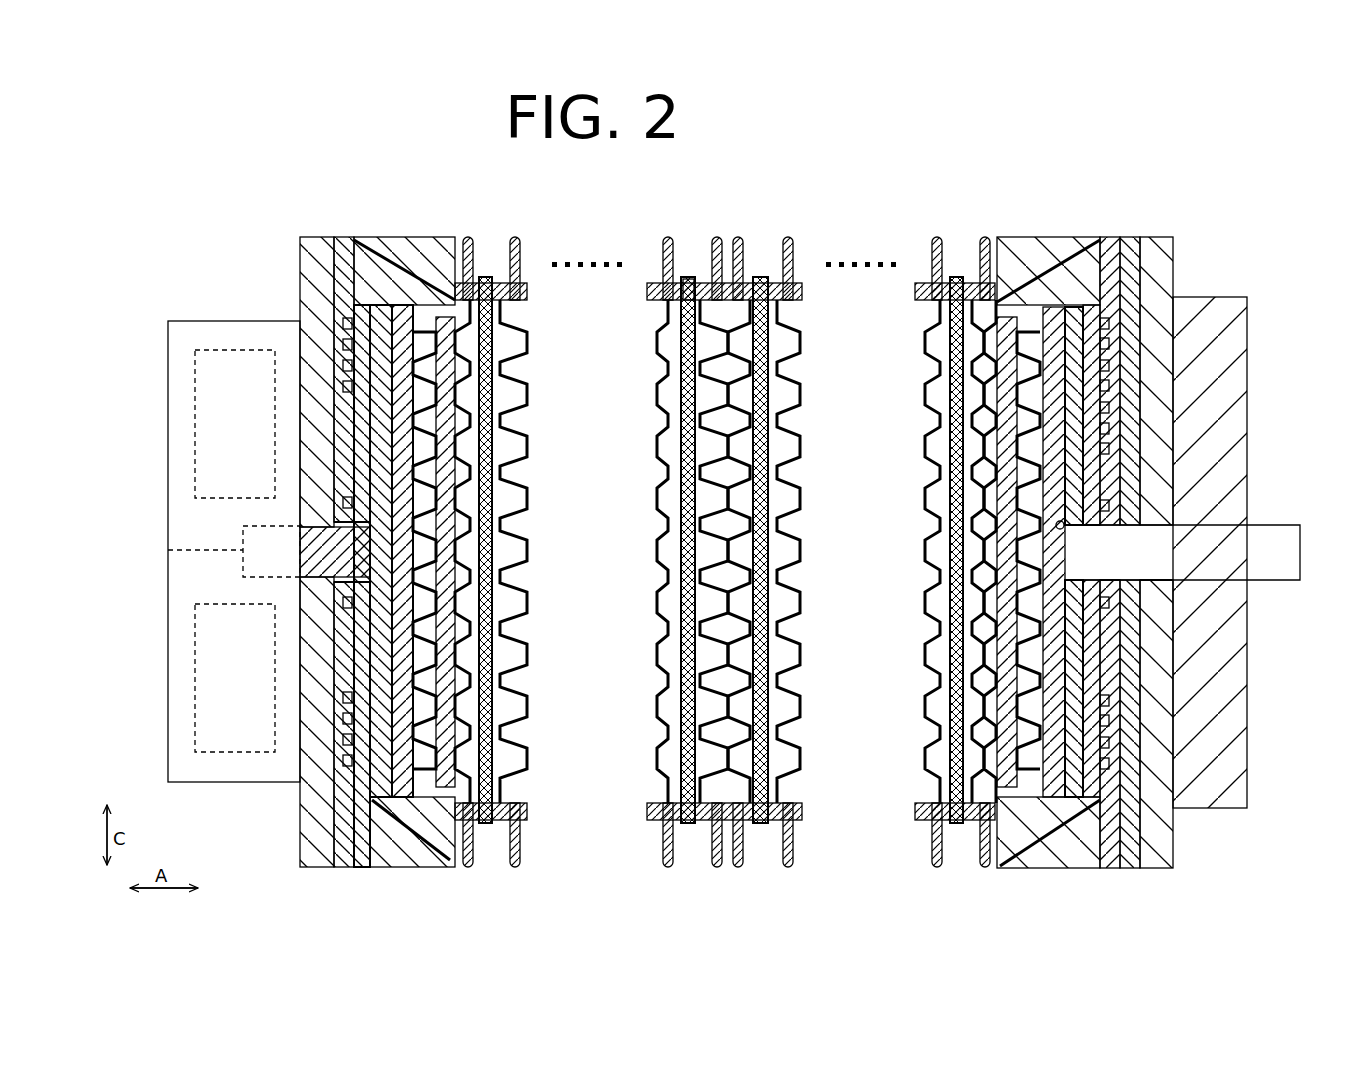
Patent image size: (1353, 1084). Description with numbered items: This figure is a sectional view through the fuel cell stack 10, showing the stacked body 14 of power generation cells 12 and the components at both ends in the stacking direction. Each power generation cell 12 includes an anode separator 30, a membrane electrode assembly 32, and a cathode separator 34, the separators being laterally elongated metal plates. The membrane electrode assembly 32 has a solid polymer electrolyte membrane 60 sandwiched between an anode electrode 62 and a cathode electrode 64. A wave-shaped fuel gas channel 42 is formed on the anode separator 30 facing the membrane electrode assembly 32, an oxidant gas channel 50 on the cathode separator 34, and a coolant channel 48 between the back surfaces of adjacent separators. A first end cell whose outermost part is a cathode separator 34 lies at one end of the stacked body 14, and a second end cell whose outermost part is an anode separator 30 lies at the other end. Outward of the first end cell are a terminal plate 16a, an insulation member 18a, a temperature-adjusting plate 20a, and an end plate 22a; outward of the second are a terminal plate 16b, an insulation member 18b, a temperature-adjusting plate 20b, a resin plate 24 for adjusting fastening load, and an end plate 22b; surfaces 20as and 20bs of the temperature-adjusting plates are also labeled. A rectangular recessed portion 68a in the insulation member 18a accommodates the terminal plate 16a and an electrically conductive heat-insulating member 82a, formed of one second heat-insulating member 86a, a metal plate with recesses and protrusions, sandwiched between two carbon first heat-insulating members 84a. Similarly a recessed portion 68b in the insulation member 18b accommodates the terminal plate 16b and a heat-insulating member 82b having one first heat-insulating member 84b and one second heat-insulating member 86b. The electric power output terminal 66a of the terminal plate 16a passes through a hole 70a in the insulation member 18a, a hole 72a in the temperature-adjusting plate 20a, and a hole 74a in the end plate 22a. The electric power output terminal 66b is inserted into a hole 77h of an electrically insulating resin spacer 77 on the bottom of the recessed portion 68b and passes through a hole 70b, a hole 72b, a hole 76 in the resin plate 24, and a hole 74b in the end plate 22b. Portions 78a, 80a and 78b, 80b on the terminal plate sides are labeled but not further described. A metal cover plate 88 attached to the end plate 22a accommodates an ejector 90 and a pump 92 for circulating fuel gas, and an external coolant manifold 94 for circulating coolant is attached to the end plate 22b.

The fuel cell stack 10 is at (196, 220).
The power generation cell 12 is at (725, 487).
The stacked body 14 is at (792, 201).
The terminal plate 16a is at (372, 303).
The terminal plate 16b is at (1075, 302).
The insulation member 18a is at (355, 235).
The insulation member 18b is at (1092, 234).
The temperature-adjusting plate 20a is at (343, 235).
The temperature-adjusting plate 20b is at (1110, 234).
The end plate surface 20as is at (355, 832).
The end plate surface 20bs is at (1100, 843).
The end plate 22a is at (304, 235).
The end plate 22b is at (1161, 234).
The resin plate 24 is at (1132, 234).
The anode separator 30 is at (717, 234).
The membrane electrode assembly 32 is at (686, 280).
The cathode separator 34 is at (661, 234).
The fuel gas channel 42 is at (712, 602).
The coolant channel 48 is at (722, 473).
The oxidant gas channel 50 is at (670, 600).
The solid polymer electrolyte membrane 60 is at (690, 370).
The anode electrode 62 is at (700, 394).
The cathode electrode 64 is at (687, 335).
The electric power output terminal 66a is at (243, 550).
The electric power output terminal 66b is at (1277, 582).
The recessed portion 68a is at (400, 800).
The recessed portion 68b is at (1020, 800).
The hole 70a is at (362, 582).
The hole 70b is at (1090, 582).
The hole 72a is at (352, 522).
The hole 72b is at (1113, 578).
The hole 74a is at (328, 580).
The hole 74b is at (1165, 580).
The hole 76 is at (1133, 524).
The resin spacer 77 is at (1060, 495).
The hole 77h is at (1058, 524).
The terminal plate protrusion 78a is at (345, 383).
The terminal plate protrusion 78b is at (1108, 340).
The terminal plate protrusion 80a is at (345, 697).
The terminal plate protrusion 80b is at (1108, 700).
The electrically-conductive heat-insulating member 82a is at (455, 181).
The electrically-conductive heat-insulating member 82b is at (1040, 199).
The first heat-insulating member 84a is at (400, 303).
The first heat-insulating member 84b is at (1007, 315).
The second heat-insulating member 86a is at (425, 330).
The second heat-insulating member 86b is at (1028, 330).
The metal cover plate 88 is at (209, 522).
The ejector 90 is at (195, 378).
The pump 92 is at (195, 636).
The external coolant manifold 94 is at (1213, 295).